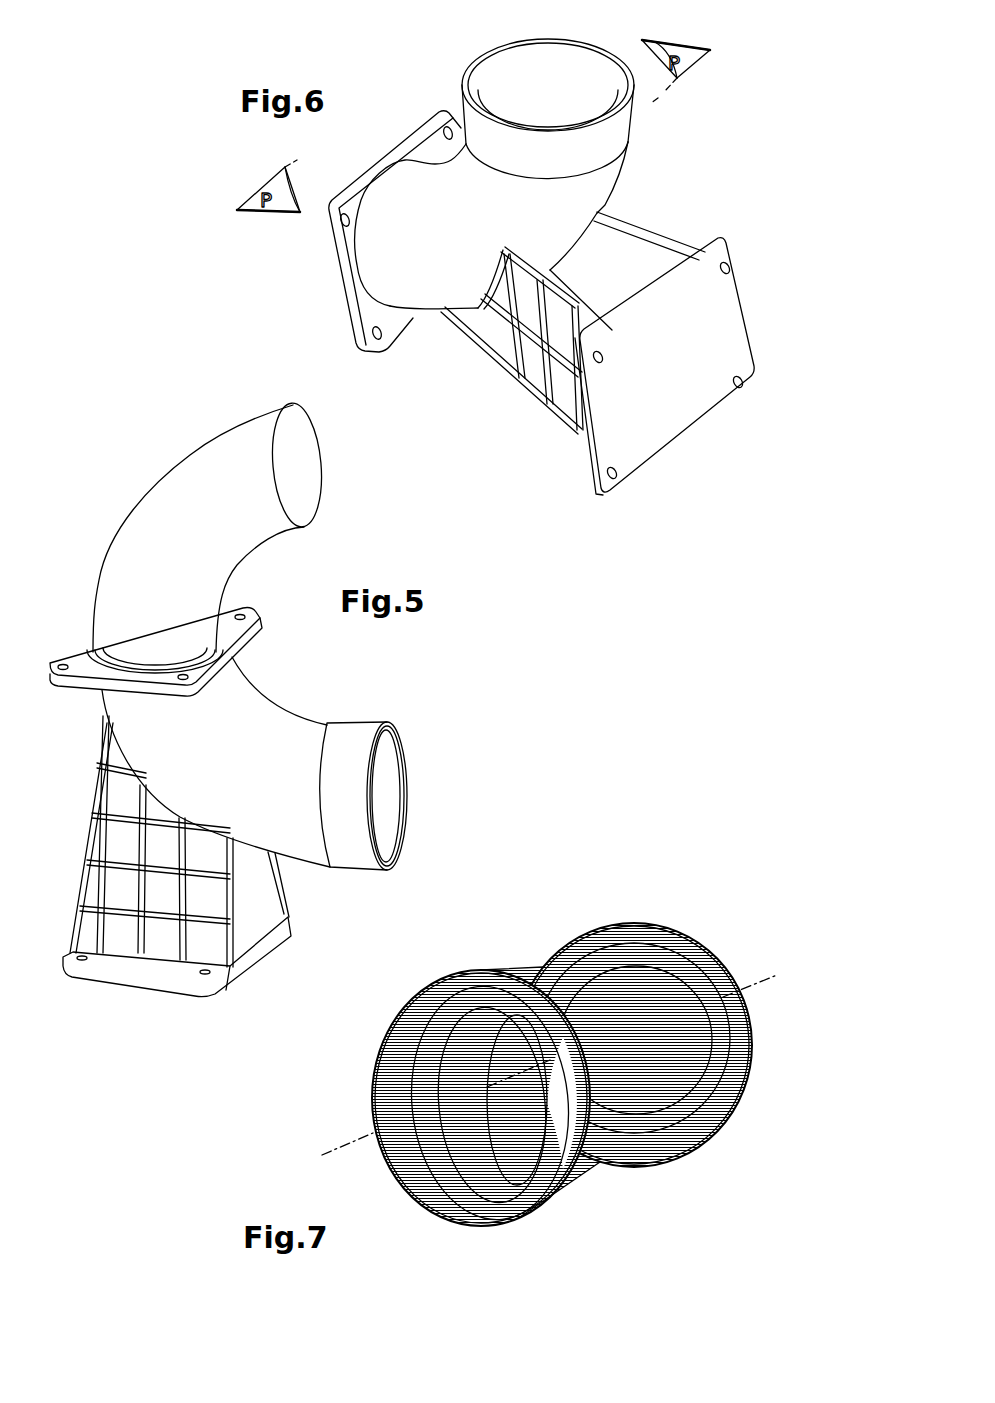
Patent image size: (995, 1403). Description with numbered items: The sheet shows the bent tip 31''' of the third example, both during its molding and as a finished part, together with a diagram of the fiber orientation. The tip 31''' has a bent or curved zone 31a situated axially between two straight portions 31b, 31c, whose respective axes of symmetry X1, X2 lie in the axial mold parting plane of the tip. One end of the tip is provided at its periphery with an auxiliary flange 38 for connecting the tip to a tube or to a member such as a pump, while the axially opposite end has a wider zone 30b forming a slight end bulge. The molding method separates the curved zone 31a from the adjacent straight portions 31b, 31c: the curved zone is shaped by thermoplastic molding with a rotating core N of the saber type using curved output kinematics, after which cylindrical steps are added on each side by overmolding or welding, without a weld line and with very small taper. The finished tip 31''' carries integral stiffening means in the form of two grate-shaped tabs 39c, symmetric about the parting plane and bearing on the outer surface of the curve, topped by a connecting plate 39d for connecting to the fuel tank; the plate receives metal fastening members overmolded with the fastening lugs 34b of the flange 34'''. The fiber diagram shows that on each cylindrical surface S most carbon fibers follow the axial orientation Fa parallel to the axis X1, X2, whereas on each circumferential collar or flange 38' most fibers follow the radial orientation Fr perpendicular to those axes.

In FIG. 6, the wider zone 30b is at (463, 52).
In FIG. 5, the wider zone 30b is at (353, 737).
In FIG. 6, the bent or curved zone 31a is at (476, 225).
In FIG. 6, the straight portion 31b is at (423, 317).
In FIG. 6, the straight portion 31c is at (617, 172).
In FIG. 6, the tip 31''' is at (515, 270).
In FIG. 5, the tip 31''' is at (212, 823).
In FIG. 6, the flange 34''' is at (495, 346).
In FIG. 5, the flange 34''' is at (125, 841).
In FIG. 6, the fastening lugs 34b is at (729, 268).
In FIG. 6, the auxiliary flange 38 is at (373, 246).
In FIG. 5, the auxiliary flange 38 is at (142, 646).
In FIG. 7, the circumferential collar or flange 38' is at (559, 1078).
In FIG. 6, the tabs 39c is at (660, 232).
In FIG. 6, the connecting plate 39d is at (701, 363).
In FIG. 5, the connecting plate 39d is at (143, 980).
In FIG. 5, the rotating core N is at (133, 478).
In FIG. 7, the cylindrical surface S is at (572, 1050).
In FIG. 7, the axial fiber orientation Fa is at (712, 1031).
In FIG. 7, the radial fiber orientation Fr is at (642, 1160).
In FIG. 7, the axis of symmetry X1 is at (333, 1147).
In FIG. 7, the axis of symmetry X2 is at (760, 980).